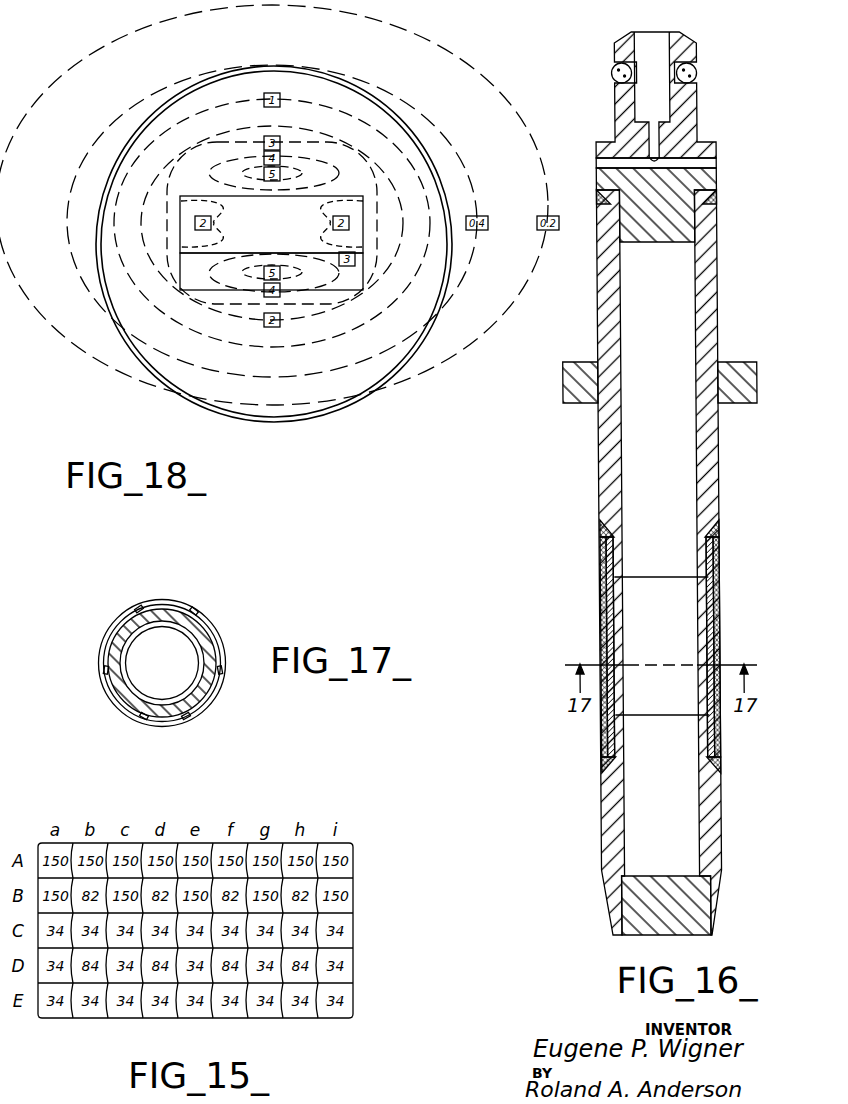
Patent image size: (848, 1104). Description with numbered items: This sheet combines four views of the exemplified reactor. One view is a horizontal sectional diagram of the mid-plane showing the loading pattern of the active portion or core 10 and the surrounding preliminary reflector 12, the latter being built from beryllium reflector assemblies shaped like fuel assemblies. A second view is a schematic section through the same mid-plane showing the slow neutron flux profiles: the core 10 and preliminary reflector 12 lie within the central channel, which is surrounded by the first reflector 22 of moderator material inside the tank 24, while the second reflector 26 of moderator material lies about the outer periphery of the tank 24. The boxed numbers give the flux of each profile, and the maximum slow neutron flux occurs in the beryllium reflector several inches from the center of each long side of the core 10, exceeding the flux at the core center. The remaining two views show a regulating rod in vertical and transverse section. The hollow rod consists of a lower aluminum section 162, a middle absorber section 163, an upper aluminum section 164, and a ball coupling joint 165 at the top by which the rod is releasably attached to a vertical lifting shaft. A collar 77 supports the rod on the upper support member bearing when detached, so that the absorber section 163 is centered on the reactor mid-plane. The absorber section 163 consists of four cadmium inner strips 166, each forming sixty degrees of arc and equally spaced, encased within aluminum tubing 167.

In FIG. 18, the active portion 10 is at (284, 231).
In FIG. 15, the active portion 10 is at (357, 1017).
In FIG. 18, the preliminary reflector 12 is at (189, 276).
In FIG. 15, the preliminary reflector 12 is at (357, 912).
In FIG. 18, the first reflector 22 is at (366, 357).
In FIG. 18, the tank 24 is at (372, 97).
In FIG. 18, the second reflector 26 is at (284, 48).
In FIG. 16, the collar 77 is at (741, 404).
In FIG. 16, the lower aluminum section 162 is at (600, 805).
In FIG. 17, the middle absorber section 163 is at (106, 629).
In FIG. 16, the middle absorber section 163 is at (599, 566).
In FIG. 16, the upper aluminum section 164 is at (718, 294).
In FIG. 16, the ball coupling joint 165 is at (692, 47).
In FIG. 17, the inner strips 166 is at (172, 605).
In FIG. 16, the inner strips 166 is at (606, 634).
In FIG. 17, the aluminum tubing 167 is at (124, 618).
In FIG. 16, the aluminum tubing 167 is at (696, 617).